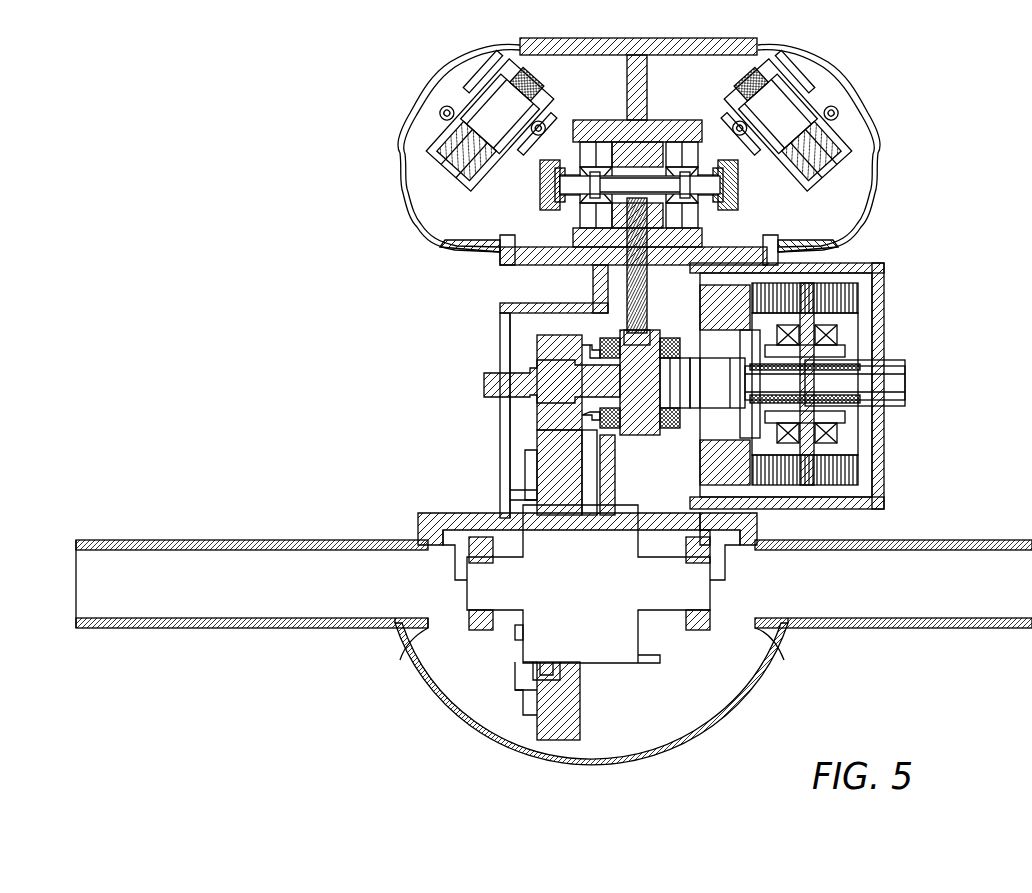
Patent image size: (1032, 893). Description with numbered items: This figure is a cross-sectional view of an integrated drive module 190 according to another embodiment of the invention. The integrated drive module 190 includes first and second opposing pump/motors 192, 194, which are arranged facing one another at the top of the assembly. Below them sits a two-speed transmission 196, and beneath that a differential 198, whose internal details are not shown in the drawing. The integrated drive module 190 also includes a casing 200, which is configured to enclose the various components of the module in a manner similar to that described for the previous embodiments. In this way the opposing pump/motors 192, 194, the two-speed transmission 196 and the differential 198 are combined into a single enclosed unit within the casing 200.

The integrated drive module 190 is at (340, 88).
The first pump/motor 192 is at (790, 72).
The second pump/motor 194 is at (488, 70).
The two-speed transmission 196 is at (865, 304).
The differential 198 is at (548, 545).
The casing 200 is at (500, 318).